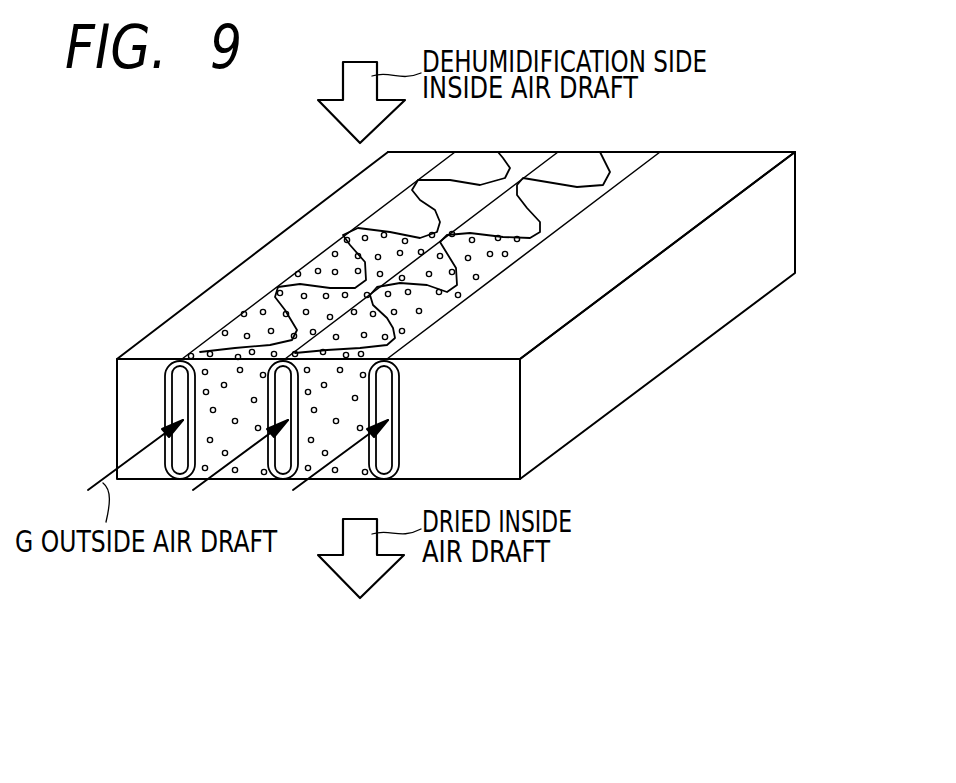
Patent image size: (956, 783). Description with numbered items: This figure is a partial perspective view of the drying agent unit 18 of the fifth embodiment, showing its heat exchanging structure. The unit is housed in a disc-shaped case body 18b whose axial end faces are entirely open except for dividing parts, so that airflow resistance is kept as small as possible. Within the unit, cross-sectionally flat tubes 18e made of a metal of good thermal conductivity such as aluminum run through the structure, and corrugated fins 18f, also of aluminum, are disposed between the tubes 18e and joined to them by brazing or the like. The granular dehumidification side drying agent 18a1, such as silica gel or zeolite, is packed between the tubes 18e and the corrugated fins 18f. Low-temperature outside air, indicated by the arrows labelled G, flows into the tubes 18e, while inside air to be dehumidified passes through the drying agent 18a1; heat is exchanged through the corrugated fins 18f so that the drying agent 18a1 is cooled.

The drying agent unit 18 is at (726, 138).
The case body 18b is at (758, 151).
The corrugated fins 18f is at (420, 203).
The tubes 18e is at (165, 393).
The dehumidification side drying agent 18a1 is at (250, 332).